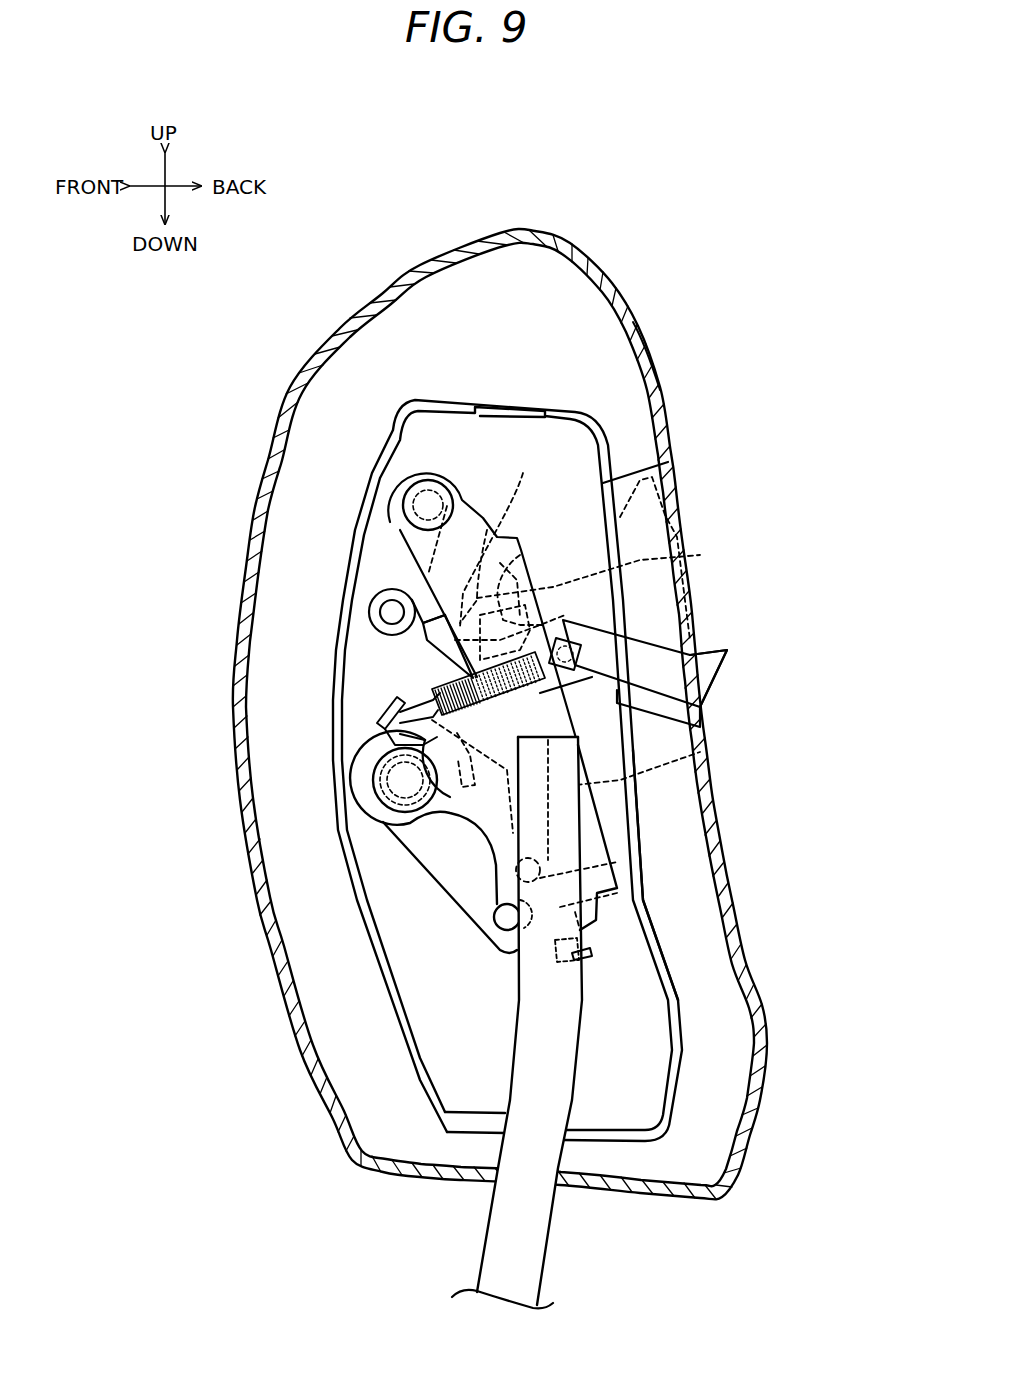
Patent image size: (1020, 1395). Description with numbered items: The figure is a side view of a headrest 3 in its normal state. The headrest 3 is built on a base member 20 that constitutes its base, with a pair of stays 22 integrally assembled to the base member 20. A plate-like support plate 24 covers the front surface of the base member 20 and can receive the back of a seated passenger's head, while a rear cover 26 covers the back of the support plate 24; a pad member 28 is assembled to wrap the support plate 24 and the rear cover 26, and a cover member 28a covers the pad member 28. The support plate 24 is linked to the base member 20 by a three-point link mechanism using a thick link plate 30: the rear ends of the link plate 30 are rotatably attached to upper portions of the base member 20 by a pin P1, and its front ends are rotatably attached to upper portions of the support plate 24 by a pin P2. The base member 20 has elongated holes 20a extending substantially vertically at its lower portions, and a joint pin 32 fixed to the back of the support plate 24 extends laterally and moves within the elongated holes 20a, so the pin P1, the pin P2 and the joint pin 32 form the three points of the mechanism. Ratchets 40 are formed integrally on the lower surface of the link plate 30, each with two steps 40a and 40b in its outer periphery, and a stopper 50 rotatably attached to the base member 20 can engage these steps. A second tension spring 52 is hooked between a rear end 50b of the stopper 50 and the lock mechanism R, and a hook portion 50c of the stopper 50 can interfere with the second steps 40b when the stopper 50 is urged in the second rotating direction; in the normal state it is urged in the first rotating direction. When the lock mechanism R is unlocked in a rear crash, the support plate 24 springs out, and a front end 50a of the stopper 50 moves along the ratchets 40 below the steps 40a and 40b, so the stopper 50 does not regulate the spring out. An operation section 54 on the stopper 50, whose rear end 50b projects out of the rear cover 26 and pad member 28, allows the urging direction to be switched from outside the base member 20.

The headrest 3 is at (722, 244).
The base member 20 is at (695, 690).
The elongated holes 20a is at (700, 752).
The stays 22 is at (523, 1231).
The support plate 24 is at (352, 912).
The rear cover 26 is at (650, 910).
The pad member 28 is at (528, 282).
The cover member 28a is at (643, 349).
The link plate 30 is at (402, 562).
The joint pin 32 is at (620, 860).
The ratchets 40 is at (420, 583).
The first step 40a is at (647, 562).
The second step 40b is at (495, 537).
The stopper 50 is at (440, 659).
The front end of stopper 50a is at (423, 626).
The rear end of stopper 50b is at (578, 638).
The hook portion 50c is at (517, 560).
The second tension spring 52 is at (443, 807).
The operation section 54 is at (667, 688).
The pin P1 is at (427, 504).
The pin P2 is at (392, 612).
The lock mechanism R is at (366, 740).